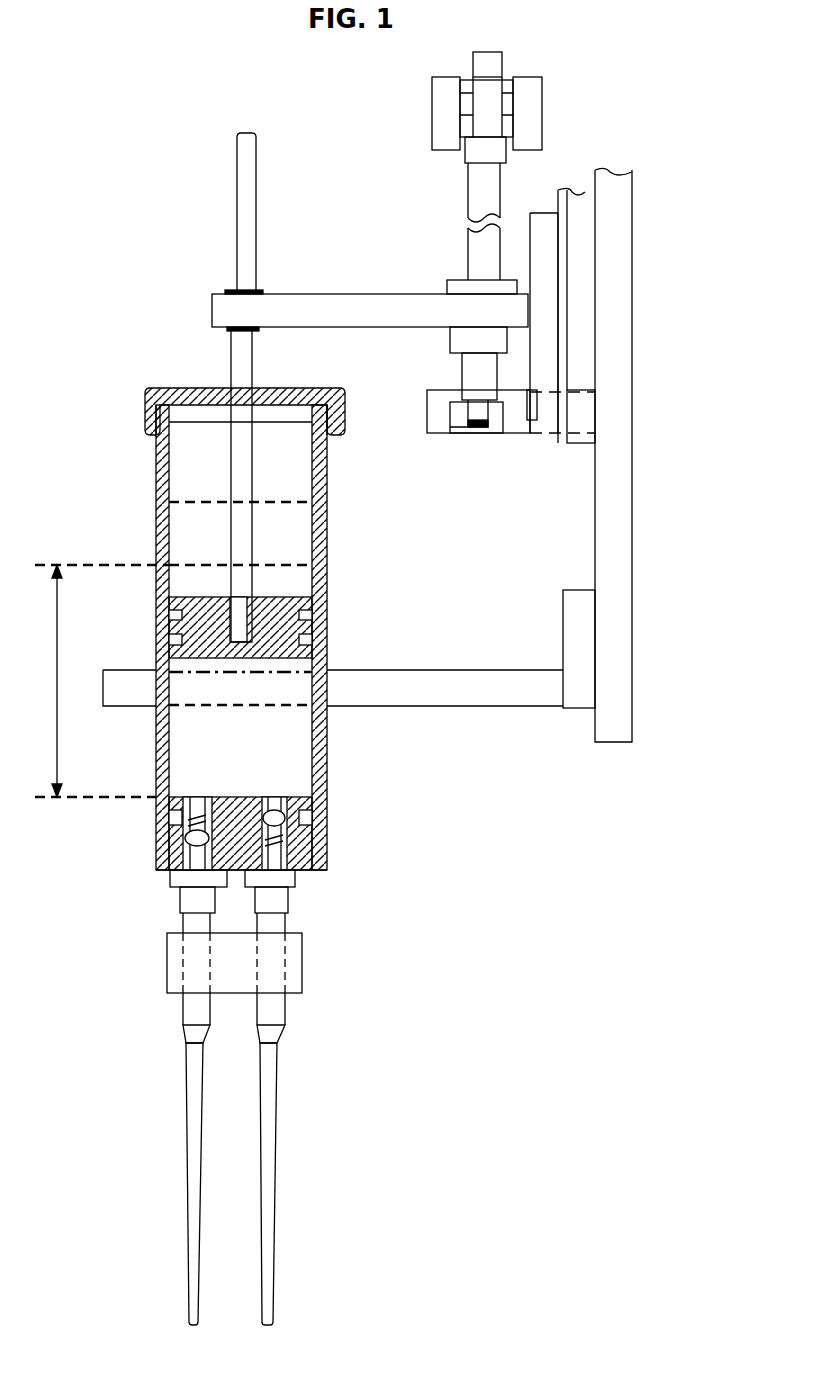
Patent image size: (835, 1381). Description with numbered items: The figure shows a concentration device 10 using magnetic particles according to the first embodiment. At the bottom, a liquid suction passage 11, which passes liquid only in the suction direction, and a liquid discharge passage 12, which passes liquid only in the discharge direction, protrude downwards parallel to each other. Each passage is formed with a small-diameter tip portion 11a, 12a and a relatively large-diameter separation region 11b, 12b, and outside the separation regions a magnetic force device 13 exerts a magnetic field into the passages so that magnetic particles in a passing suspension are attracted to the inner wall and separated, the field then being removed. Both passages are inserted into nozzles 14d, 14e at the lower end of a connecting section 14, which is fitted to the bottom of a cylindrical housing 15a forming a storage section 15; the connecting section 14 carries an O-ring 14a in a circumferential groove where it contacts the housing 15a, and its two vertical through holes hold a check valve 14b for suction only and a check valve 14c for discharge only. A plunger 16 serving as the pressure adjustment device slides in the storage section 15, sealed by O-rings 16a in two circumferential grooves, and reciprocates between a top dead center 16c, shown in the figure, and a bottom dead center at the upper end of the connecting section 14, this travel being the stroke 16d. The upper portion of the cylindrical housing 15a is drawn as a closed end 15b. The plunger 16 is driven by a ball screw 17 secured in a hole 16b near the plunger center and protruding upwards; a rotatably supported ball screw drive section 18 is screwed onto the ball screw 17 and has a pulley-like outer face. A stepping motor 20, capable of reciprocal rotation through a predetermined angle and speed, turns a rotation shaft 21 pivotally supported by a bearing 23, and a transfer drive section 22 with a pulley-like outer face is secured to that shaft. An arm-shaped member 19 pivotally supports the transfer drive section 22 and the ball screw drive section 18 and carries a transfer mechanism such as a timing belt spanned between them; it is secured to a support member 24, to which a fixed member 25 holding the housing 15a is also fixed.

The concentration device 10 is at (142, 366).
The liquid suction passage 11 is at (183, 1110).
The small-diameter tip portion 11a is at (188, 1186).
The separation region 11b is at (183, 1030).
The liquid discharge passage 12 is at (290, 1110).
The small-diameter tip portion 12a is at (275, 1186).
The separation region 12b is at (285, 1030).
The magnetic force device 13 is at (302, 962).
The connecting section 14 is at (190, 860).
The O-ring 14a is at (175, 813).
The check valve 14b is at (185, 840).
The check valve 14c is at (305, 838).
The nozzle 14d is at (175, 880).
The nozzle 14e is at (293, 880).
The storage section 15 is at (290, 748).
The cylindrical housing 15a is at (158, 458).
The cylinder cap 15b is at (145, 402).
The plunger 16 is at (275, 605).
The O-rings 16a is at (305, 640).
The hole 16b is at (220, 625).
The top dead center 16c is at (190, 528).
The stroke 16d is at (88, 681).
The ball screw 17 is at (237, 222).
The ball screw drive section 18 is at (262, 293).
The arm-shaped member 19 is at (342, 330).
The stepping motor 20 is at (512, 80).
The rotation shaft 21 is at (468, 192).
The transfer drive section 22 is at (447, 288).
The bearing 23 is at (452, 437).
The support member 24 is at (625, 482).
The fixed member 25 is at (485, 710).